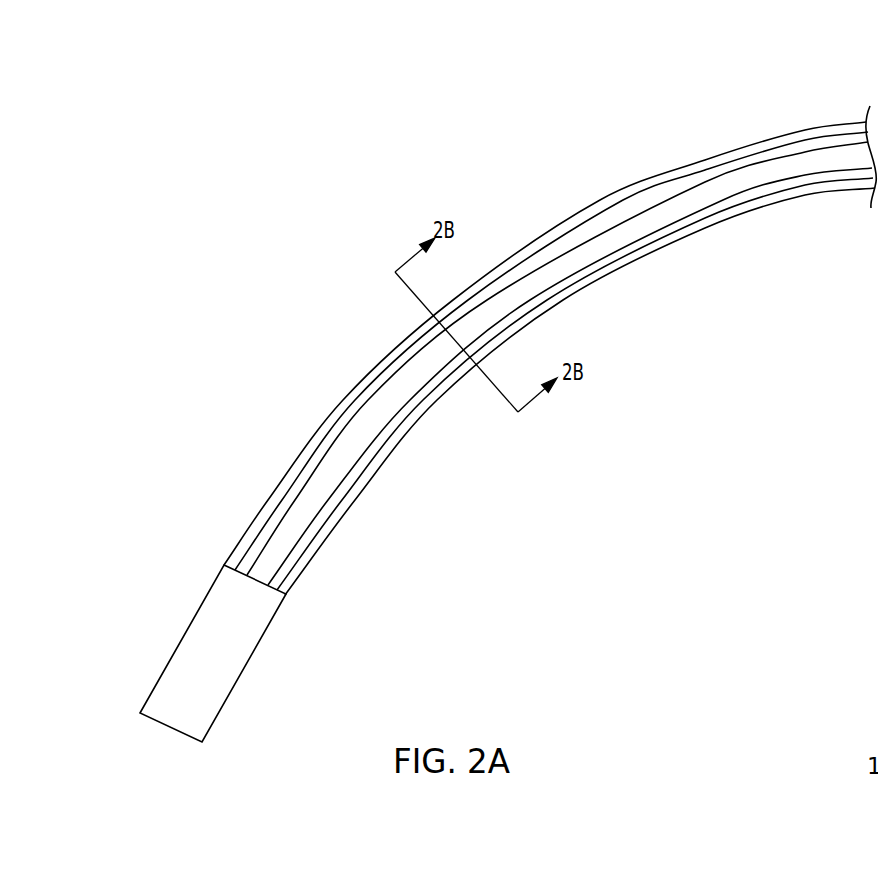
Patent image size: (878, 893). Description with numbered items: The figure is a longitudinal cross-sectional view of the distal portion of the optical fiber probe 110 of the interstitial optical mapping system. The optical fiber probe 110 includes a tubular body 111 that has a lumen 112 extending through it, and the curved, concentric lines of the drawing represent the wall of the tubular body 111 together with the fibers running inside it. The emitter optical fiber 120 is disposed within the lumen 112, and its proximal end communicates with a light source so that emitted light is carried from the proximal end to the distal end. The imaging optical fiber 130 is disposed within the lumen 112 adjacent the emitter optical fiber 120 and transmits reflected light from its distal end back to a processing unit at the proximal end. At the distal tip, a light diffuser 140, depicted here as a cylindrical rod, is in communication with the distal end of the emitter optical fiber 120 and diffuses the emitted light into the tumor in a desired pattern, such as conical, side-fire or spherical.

The optical fiber probe 110 is at (506, 424).
The tubular body 111 is at (341, 410).
The lumen 112 is at (635, 226).
The emitter optical fiber 120 is at (308, 468).
The imaging optical fiber 130 is at (387, 433).
The light diffuser 140 is at (218, 635).